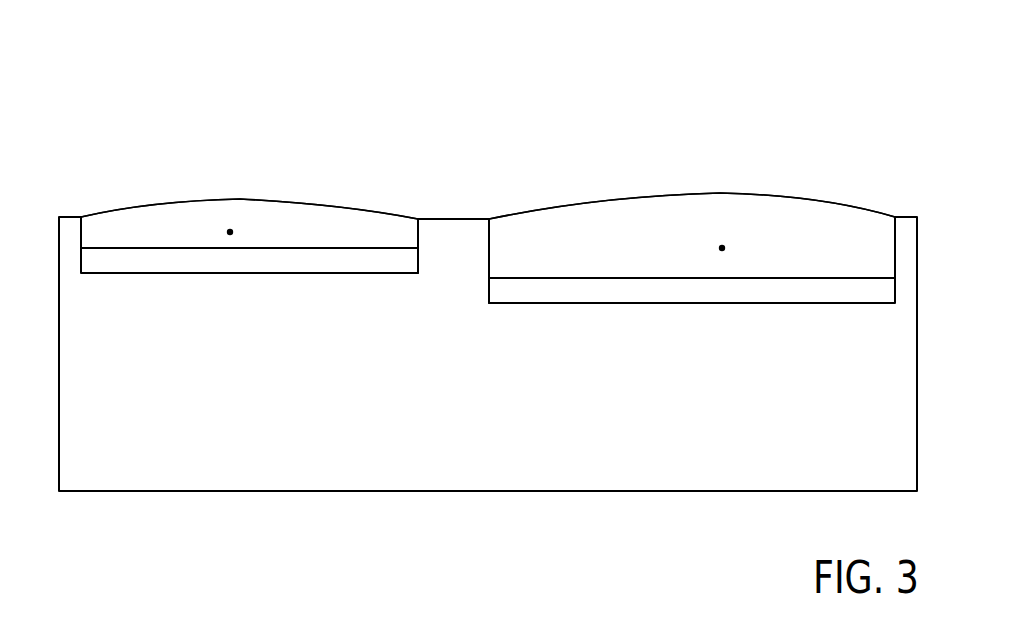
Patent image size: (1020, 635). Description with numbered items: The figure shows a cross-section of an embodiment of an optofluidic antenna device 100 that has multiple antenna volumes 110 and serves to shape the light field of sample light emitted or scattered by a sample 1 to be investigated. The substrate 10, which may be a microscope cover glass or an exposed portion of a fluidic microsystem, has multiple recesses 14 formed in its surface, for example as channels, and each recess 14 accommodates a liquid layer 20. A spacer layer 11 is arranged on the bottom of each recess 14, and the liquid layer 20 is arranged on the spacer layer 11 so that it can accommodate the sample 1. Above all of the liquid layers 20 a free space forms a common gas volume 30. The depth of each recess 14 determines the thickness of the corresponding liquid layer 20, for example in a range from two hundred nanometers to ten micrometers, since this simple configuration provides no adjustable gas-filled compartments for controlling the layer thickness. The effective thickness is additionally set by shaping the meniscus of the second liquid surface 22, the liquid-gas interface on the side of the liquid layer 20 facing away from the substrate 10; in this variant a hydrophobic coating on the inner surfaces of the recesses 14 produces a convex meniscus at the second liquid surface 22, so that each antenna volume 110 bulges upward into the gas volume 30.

The optofluidic antenna device 100 is at (145, 65).
The substrate 10 is at (90, 434).
The spacer layer 11 is at (90, 260).
The recess 14 is at (479, 228).
The antenna volume 110 is at (549, 233).
The liquid layer 20 is at (210, 233).
The gas volume 30 is at (243, 156).
The second liquid surface 22 is at (228, 199).
The sample 1 is at (230, 232).